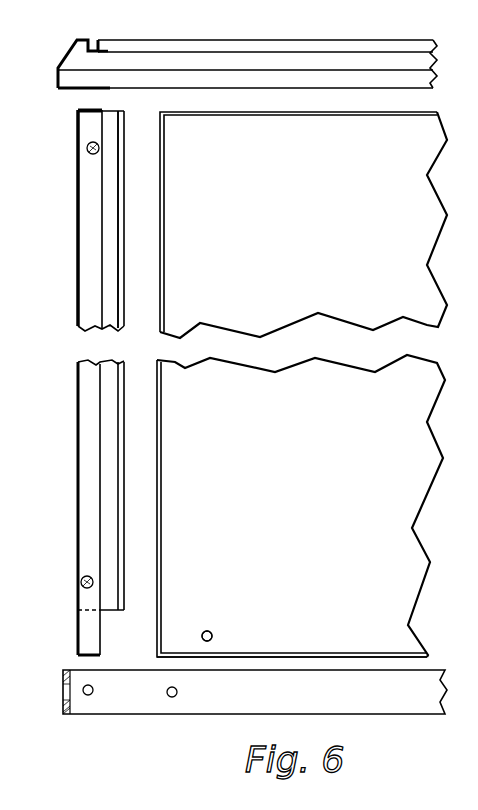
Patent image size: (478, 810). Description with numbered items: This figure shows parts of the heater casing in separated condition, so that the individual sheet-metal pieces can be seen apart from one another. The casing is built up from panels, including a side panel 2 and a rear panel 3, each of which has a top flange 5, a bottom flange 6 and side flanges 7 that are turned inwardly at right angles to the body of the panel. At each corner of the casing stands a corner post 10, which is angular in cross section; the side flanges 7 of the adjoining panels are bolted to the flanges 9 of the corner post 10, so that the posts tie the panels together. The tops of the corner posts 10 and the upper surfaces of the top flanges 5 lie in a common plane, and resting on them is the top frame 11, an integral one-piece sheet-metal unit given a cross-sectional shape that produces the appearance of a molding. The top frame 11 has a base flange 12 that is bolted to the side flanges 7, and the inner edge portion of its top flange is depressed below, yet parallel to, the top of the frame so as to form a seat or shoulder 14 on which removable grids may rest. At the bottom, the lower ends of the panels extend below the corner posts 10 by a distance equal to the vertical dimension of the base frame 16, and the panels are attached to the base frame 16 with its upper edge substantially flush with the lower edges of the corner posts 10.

The side panel 2 is at (362, 118).
The rear panel 3 is at (77, 463).
The top flange 5 is at (98, 113).
The bottom flange 6 is at (318, 660).
The side flange 7 is at (90, 300).
The flange of corner post 9 is at (120, 278).
The corner post 10 is at (113, 215).
The top frame 11 is at (63, 62).
The base flange 12 is at (210, 84).
The seat or shoulder 14 is at (100, 48).
The base frame 16 is at (62, 702).